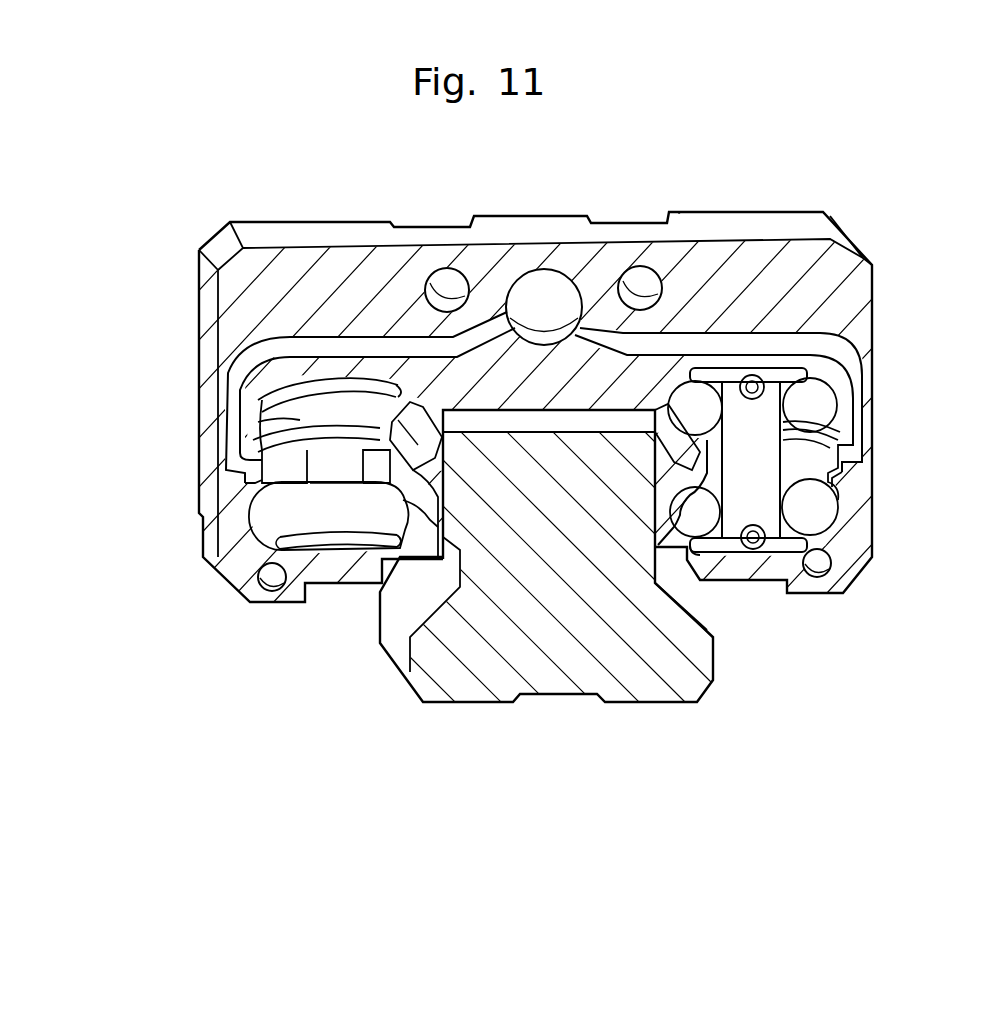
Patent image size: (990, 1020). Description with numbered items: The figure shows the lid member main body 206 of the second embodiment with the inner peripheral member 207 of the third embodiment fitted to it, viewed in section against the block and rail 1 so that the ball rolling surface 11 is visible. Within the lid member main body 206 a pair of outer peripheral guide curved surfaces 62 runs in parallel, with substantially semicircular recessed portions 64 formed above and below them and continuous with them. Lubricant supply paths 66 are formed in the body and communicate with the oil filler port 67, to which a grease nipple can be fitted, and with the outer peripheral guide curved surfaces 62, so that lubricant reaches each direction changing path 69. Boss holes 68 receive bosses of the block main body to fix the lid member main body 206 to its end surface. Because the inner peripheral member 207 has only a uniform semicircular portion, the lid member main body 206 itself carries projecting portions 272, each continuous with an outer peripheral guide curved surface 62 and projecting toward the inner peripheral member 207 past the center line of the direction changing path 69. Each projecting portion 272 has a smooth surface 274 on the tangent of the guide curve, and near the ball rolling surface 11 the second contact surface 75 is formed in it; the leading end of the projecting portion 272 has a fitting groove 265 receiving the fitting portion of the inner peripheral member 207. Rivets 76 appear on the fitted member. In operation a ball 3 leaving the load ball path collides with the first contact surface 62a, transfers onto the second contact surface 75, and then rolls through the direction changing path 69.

The lid member main body 206 is at (335, 203).
The guide rail 1 is at (633, 708).
The ball 3 is at (683, 400).
The ball rolling surface 11 is at (425, 446).
The outer peripheral guide curved surface 62 is at (266, 414).
The first contact surface 62a is at (395, 393).
The recessed portion 64 is at (262, 402).
The lubricant supply path 66 is at (290, 330).
The oil filler port 67 is at (541, 268).
The boss hole 68 is at (447, 268).
The direction changing path 69 is at (825, 402).
The second contact surface 75 is at (385, 468).
The rivet 76 is at (752, 400).
The inner peripheral member 207 is at (770, 562).
The fitting groove 265 is at (242, 478).
The projecting portion 272 is at (438, 488).
The smooth surface 274 is at (337, 435).